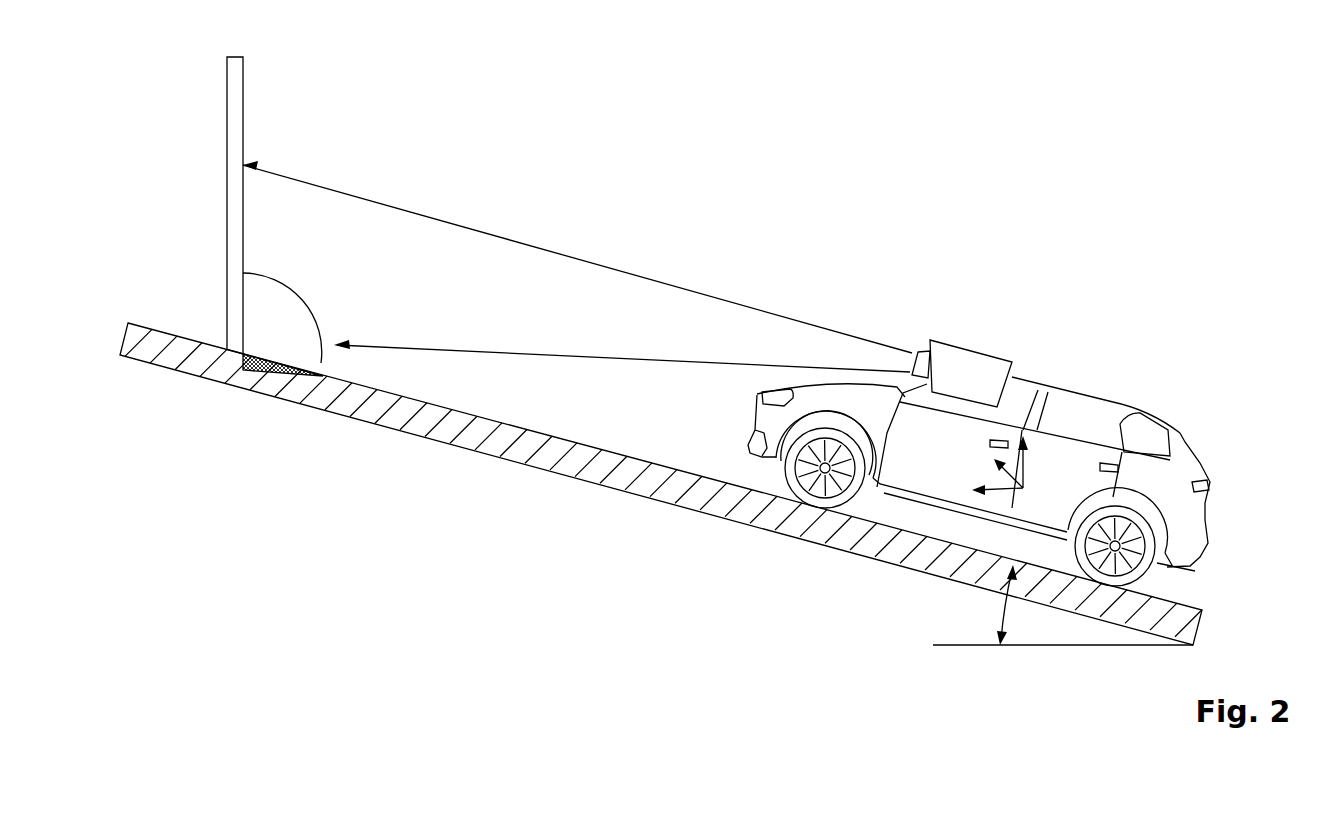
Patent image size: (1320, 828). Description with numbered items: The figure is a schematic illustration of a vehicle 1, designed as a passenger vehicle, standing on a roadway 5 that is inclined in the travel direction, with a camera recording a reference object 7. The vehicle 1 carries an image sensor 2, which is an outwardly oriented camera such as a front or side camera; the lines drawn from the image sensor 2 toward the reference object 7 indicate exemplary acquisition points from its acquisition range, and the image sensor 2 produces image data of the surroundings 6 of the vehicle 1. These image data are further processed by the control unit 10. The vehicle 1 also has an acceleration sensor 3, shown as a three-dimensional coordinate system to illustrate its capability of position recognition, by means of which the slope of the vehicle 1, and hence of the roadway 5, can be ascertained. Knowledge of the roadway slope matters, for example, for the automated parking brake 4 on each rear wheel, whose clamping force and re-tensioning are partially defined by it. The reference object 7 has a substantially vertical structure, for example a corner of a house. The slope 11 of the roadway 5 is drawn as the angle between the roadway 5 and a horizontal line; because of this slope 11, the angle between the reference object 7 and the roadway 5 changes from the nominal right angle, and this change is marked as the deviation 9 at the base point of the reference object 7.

The vehicle 1 is at (1205, 505).
The image sensor 2 is at (973, 342).
The acceleration sensor 3 is at (1008, 501).
The automated parking brake 4 is at (1128, 554).
The roadway 5 is at (667, 464).
The surroundings 6 is at (658, 100).
The reference object 7 is at (235, 102).
The deviation 9 is at (323, 362).
The control unit 10 is at (1070, 464).
The slope 11 is at (1001, 605).